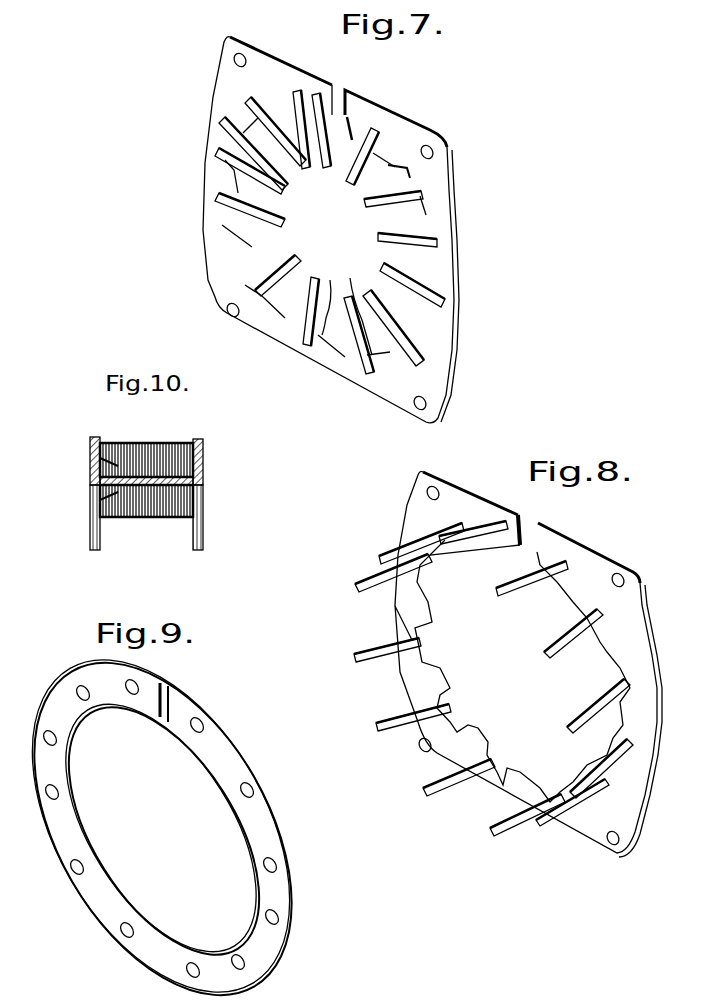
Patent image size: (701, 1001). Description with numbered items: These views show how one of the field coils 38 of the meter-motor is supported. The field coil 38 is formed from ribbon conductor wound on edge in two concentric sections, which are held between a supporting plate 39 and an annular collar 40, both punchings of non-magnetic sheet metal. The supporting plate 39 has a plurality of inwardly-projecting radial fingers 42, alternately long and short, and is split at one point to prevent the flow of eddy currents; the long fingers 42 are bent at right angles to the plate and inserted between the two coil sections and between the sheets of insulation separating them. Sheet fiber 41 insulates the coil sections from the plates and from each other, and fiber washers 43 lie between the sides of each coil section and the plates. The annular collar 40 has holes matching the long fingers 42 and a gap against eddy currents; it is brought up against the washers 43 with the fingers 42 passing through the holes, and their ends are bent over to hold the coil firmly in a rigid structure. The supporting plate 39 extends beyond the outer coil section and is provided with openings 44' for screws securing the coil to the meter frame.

In FIG. 10, the field coils 38 is at (145, 443).
In FIG. 7, the supporting plate 39 is at (300, 356).
In FIG. 8, the supporting plate 39 is at (408, 687).
In FIG. 10, the supporting plate 39 is at (200, 439).
In FIG. 9, the annular collar 40 is at (52, 693).
In FIG. 10, the annular collar 40 is at (96, 437).
In FIG. 10, the sheet fiber 41 is at (115, 466).
In FIG. 7, the radial fingers 42 is at (345, 292).
In FIG. 8, the radial fingers 42 is at (422, 615).
In FIG. 10, the fiber washers 43 is at (204, 465).
In FIG. 7, the openings 44' is at (455, 153).